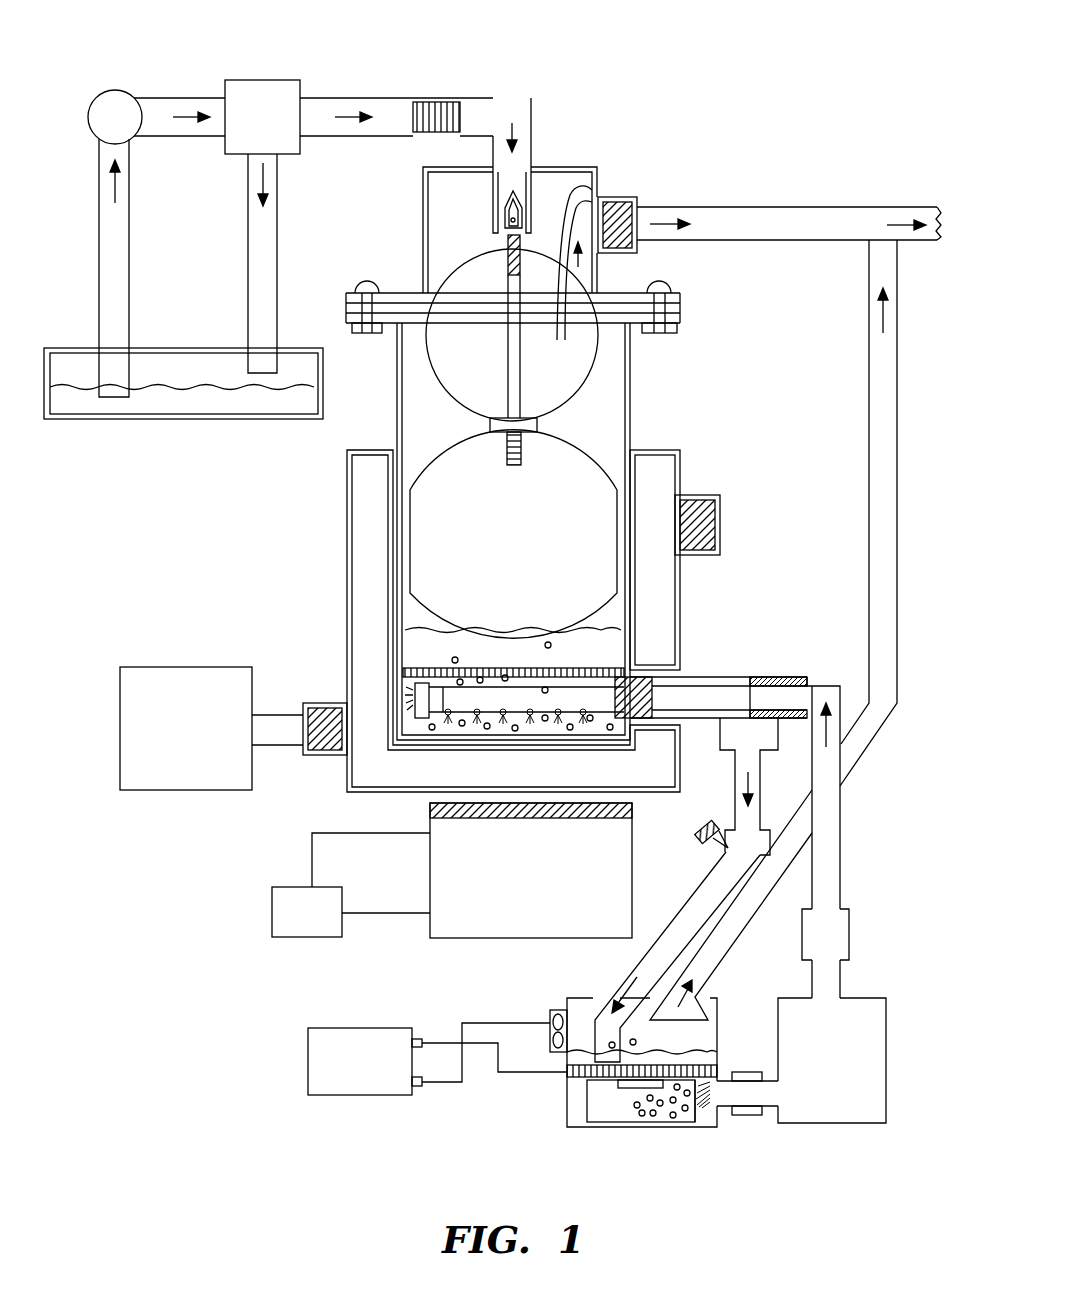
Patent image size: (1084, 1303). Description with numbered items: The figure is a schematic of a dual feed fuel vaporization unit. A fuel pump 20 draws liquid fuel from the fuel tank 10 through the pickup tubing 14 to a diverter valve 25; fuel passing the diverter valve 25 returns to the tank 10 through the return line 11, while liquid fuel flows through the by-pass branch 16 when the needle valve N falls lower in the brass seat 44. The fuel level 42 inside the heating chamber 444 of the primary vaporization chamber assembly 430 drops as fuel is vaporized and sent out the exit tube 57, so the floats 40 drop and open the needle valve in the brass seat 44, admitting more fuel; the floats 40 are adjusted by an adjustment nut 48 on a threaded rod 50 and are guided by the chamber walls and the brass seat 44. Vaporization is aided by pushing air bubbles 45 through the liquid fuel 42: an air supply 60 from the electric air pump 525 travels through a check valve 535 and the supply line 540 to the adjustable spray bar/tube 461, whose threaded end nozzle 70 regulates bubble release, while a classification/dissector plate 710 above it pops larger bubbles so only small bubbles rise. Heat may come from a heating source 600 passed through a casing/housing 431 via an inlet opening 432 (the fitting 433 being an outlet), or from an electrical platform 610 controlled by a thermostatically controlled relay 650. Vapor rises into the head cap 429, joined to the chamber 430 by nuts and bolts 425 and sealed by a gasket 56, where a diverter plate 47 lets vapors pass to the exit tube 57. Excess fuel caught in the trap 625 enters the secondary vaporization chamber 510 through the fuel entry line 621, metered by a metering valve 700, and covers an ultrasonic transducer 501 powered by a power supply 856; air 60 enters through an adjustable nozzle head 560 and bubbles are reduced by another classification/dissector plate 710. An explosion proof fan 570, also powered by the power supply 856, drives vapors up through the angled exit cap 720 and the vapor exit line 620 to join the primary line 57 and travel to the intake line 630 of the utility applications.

The fuel tank 10 is at (153, 380).
The return line 11 is at (248, 268).
The pickup tubing 14 is at (99, 253).
The by-pass branch 16 is at (403, 97).
The fuel pump 20 is at (110, 89).
The diverter valve 25 is at (260, 80).
The floats 40 is at (461, 373).
The fuel level / liquid fuel 42 is at (423, 657).
The brass seat 44 is at (528, 205).
The air bubbles 45 is at (548, 642).
The diverter plate 47 is at (575, 195).
The adjustment nut 48 is at (490, 425).
The threaded rod 50 is at (507, 455).
The gasket 56 is at (680, 305).
The exit tube 57 is at (710, 205).
The air supply 60 is at (826, 980).
The threaded end nozzle 70 is at (412, 703).
The nuts and bolts 425 is at (668, 281).
The head cap 429 is at (423, 200).
The primary vaporization chamber assembly 430 is at (630, 383).
The casing/housing 431 is at (347, 505).
The inlet opening 432 is at (325, 757).
The fitting 433 is at (707, 492).
The heating chamber 444 is at (592, 428).
The adjustable spray bar/tube 461 is at (494, 697).
The ultrasonic transducer 501 is at (698, 1105).
The secondary vaporization chamber 510 is at (585, 1113).
The electric air pump 525 is at (886, 1100).
The check valve 535 is at (850, 932).
The supply line 540 is at (845, 862).
The adjustable nozzle head 560 is at (722, 1078).
The explosion proof fan 570 is at (550, 1013).
The heating source 600 is at (166, 740).
The electrical platform 610 is at (498, 886).
The vapor exit line 620 is at (867, 517).
The fuel entry line 621 is at (675, 905).
The trap 625 is at (747, 735).
The intake line of utility applications 630 is at (925, 207).
The thermostatically controlled relay 650 is at (287, 925).
The metering valve 700 is at (702, 828).
The classification/dissector plate 710 is at (405, 671).
The angled exit cap 720 is at (672, 1010).
The power supply 856 is at (337, 1075).